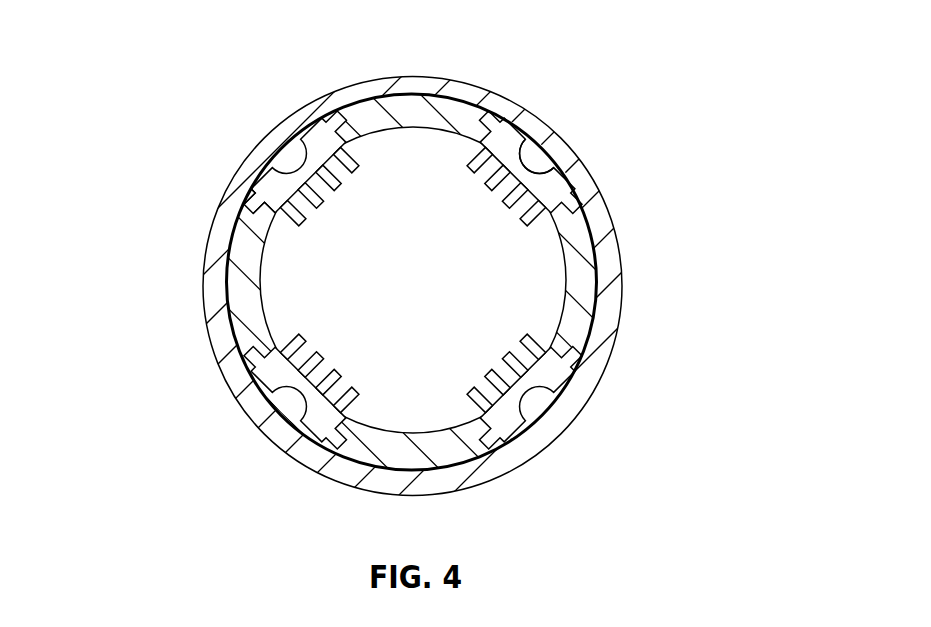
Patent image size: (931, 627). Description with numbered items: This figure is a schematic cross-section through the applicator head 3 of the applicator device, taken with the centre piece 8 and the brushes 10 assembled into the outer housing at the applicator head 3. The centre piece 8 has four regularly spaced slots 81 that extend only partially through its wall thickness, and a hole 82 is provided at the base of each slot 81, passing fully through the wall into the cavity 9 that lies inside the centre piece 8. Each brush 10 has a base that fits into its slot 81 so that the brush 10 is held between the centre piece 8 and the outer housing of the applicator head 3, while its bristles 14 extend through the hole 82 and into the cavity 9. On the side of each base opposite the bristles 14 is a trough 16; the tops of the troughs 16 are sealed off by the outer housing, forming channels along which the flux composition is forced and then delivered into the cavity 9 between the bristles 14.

The applicator head 3 is at (604, 249).
The centre piece 8 is at (588, 290).
The cavity 9 is at (423, 292).
The brush 10 is at (556, 188).
The bristles 14 is at (475, 165).
The trough 16 is at (542, 158).
The slot 81 is at (263, 204).
The hole 82 is at (259, 215).